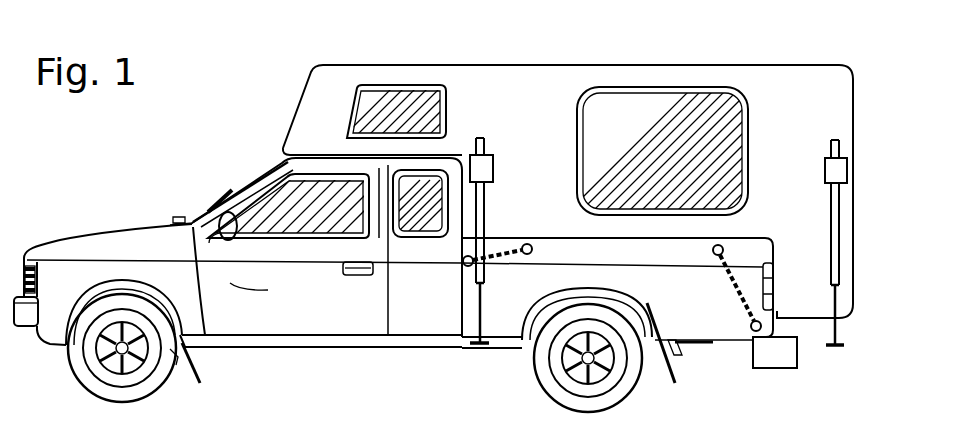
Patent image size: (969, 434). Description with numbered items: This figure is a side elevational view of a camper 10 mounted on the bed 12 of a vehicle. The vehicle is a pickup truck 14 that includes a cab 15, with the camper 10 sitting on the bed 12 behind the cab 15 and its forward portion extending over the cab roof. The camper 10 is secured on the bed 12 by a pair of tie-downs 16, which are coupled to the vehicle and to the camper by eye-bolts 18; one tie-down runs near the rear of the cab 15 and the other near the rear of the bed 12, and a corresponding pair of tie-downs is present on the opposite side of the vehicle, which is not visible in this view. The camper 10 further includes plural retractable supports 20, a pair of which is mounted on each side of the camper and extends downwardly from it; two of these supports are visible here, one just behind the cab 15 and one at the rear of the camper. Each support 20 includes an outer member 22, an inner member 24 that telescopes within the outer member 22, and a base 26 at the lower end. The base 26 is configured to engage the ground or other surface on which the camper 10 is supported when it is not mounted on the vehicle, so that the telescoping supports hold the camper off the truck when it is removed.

The camper 10 is at (548, 50).
The bed 12 is at (446, 308).
The pickup truck 14 is at (221, 136).
The cab 15 is at (266, 173).
The tie-downs 16 is at (496, 264).
The eye-bolts 18 is at (533, 246).
The retractable supports 20 is at (495, 171).
The outer member 22 is at (489, 216).
The inner member 24 is at (486, 299).
The base 26 is at (479, 347).